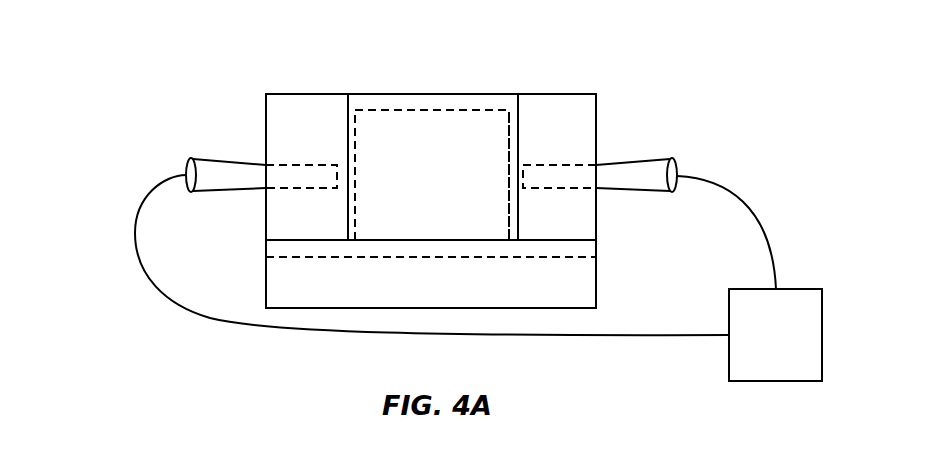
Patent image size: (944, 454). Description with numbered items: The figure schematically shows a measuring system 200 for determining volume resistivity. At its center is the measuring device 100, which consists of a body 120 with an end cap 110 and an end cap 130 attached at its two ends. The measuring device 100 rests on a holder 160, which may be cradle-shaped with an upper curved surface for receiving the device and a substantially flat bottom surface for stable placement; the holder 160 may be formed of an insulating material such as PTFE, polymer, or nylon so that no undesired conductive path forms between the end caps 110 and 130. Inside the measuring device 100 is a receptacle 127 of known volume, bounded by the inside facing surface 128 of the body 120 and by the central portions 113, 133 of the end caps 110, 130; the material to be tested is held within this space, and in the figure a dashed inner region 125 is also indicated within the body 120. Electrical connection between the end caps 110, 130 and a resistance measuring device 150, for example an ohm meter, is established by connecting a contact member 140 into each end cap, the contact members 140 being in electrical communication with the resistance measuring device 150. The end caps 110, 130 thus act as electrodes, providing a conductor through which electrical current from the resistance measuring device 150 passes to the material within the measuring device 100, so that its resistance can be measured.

The measuring device 100 is at (632, 82).
The end cap 110 is at (305, 94).
The central portion 113 is at (355, 207).
The body 120 is at (432, 94).
The inner region / chamber 125 is at (450, 135).
The receptacle 127 is at (379, 145).
The inside facing surface 128 is at (398, 110).
The end cap 130 is at (552, 94).
The central portion 133 is at (510, 222).
The contact member 140 is at (649, 143).
The resistance measuring device 150 is at (757, 348).
The holder 160 is at (561, 281).
The measuring system 200 is at (146, 130).